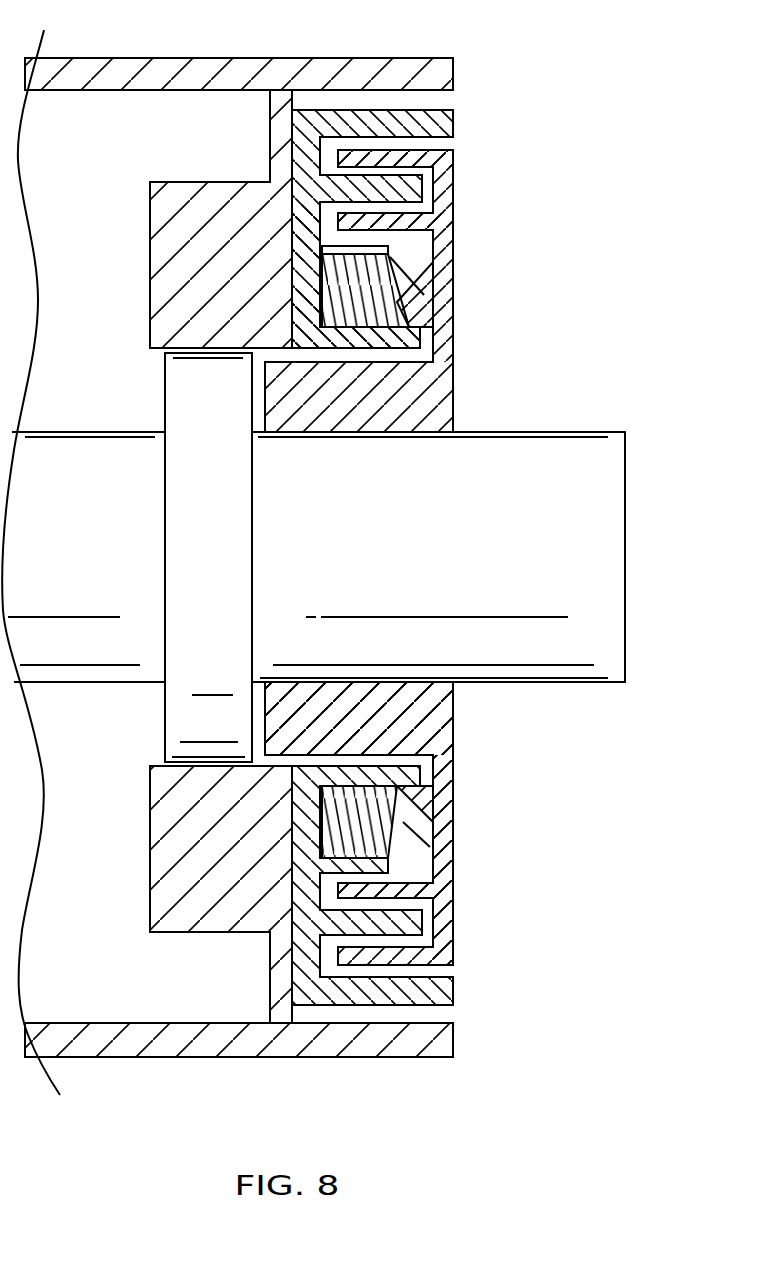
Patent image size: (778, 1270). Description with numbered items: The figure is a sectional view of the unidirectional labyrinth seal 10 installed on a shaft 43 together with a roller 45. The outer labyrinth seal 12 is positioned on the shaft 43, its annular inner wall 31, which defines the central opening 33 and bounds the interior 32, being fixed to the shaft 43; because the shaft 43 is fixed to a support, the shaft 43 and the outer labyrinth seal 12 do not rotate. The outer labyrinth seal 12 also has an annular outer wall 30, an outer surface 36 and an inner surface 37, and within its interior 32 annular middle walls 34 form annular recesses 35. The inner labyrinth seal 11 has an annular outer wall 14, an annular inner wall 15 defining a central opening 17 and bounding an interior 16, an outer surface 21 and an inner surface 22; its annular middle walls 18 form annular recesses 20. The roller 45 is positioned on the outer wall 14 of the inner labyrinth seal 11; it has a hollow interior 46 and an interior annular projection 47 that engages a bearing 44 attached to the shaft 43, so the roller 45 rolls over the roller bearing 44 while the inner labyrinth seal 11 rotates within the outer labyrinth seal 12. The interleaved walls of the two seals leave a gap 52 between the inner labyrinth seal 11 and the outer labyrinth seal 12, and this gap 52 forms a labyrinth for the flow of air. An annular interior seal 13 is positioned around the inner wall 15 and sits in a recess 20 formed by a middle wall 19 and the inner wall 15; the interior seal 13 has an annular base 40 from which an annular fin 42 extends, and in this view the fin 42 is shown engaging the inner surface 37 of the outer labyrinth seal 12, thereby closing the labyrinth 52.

The unidirectional labyrinth seal 10 is at (475, 213).
The inner labyrinth seal 11 is at (287, 107).
The outer labyrinth seal 12 is at (459, 972).
The interior seal 13 is at (370, 277).
The outer wall 14 is at (402, 128).
The inner wall 15 is at (372, 337).
The interior 16 is at (332, 154).
The central opening 17 is at (310, 354).
The middle walls 18 is at (395, 196).
The middle wall 19 is at (318, 249).
The recesses 20 is at (330, 225).
The outer surface 21 is at (291, 305).
The inner surface 22 is at (311, 318).
The outer wall 30 is at (418, 962).
The inner wall 31 is at (418, 726).
The interior 32 is at (413, 864).
The central opening 33 is at (372, 679).
The middle walls 34 is at (400, 887).
The recesses 35 is at (420, 930).
The outer surface 36 is at (463, 777).
The inner surface 37 is at (441, 790).
The base 40 is at (345, 322).
The fin 42 is at (418, 292).
The shaft 43 is at (608, 569).
The bearing 44 is at (183, 543).
The roller 45 is at (148, 58).
The hollow interior 46 is at (132, 111).
The interior annular projection 47 is at (202, 205).
The gap 52 is at (356, 358).